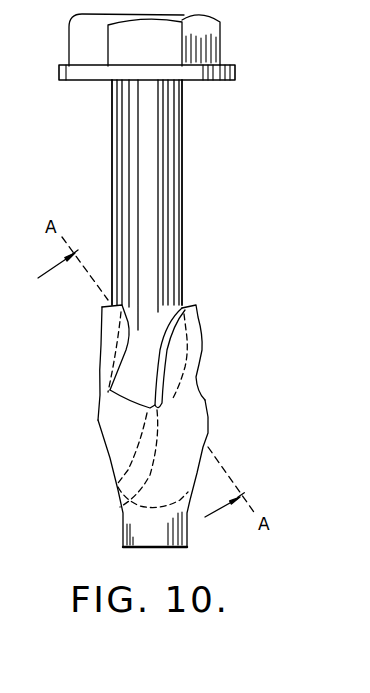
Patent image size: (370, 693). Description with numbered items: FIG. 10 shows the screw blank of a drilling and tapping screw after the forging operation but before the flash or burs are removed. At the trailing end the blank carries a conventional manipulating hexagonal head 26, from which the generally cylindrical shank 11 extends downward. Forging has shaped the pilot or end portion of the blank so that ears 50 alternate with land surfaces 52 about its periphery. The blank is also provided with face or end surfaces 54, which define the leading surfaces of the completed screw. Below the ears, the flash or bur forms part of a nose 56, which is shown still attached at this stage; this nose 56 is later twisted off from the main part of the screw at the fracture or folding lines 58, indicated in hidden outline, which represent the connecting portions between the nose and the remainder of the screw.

The hexagonal head 26 is at (210, 30).
The shank 11 is at (157, 177).
The ears 50 is at (112, 321).
The land surfaces 52 is at (125, 360).
The face or end surfaces 54 is at (140, 380).
The nose 56 is at (90, 463).
The fracture or folding lines 58 is at (197, 367).